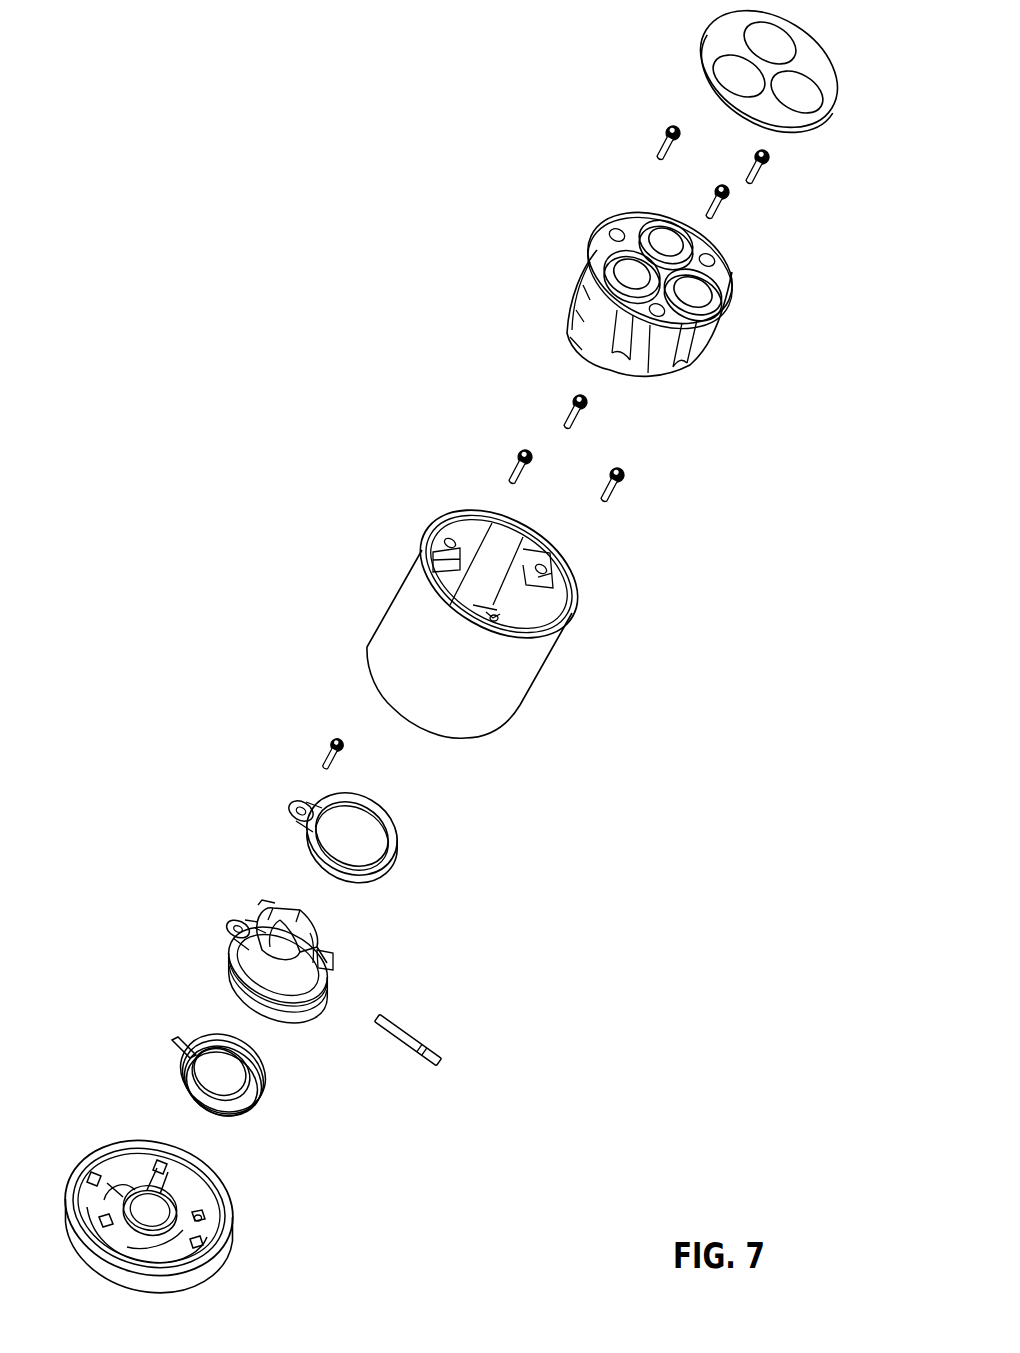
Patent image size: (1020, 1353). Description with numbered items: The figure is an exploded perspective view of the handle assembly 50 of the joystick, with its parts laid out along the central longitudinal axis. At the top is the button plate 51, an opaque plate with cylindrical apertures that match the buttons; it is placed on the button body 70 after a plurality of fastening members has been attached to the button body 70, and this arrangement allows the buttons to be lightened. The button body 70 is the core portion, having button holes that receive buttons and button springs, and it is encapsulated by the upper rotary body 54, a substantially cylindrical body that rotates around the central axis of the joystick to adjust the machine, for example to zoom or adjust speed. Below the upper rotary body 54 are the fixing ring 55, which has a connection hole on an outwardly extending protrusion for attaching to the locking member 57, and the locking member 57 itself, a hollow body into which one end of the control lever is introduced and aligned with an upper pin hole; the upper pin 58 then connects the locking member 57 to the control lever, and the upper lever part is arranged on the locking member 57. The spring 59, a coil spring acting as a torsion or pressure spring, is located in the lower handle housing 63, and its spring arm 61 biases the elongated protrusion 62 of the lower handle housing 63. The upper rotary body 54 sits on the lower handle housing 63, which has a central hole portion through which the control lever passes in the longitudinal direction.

The handle assembly 50 is at (287, 318).
The button plate 51 is at (683, 70).
The button body 70 is at (563, 277).
The upper rotary body 54 is at (374, 625).
The fixing ring 55 is at (292, 826).
The locking member 57 is at (207, 980).
The upper pin 58 is at (417, 1023).
The spring 59 is at (275, 1092).
The spring arm 61 is at (185, 1052).
The protrusion 62 is at (95, 1163).
The lower handle housing 63 is at (250, 1247).